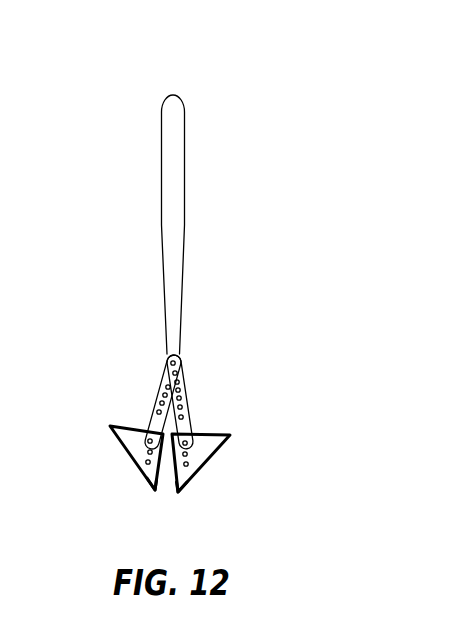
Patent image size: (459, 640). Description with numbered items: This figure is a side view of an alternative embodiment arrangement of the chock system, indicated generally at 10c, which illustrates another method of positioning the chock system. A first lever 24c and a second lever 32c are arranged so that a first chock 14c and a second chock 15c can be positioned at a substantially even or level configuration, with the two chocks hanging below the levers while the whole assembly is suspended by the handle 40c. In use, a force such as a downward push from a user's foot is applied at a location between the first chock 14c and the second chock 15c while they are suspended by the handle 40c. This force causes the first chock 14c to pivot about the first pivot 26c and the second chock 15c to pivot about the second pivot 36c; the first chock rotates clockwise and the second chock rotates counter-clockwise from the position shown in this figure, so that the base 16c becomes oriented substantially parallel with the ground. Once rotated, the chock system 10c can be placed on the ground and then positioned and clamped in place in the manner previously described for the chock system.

The chock system 10c is at (256, 82).
The handle 40c is at (184, 180).
The first lever 24c is at (163, 393).
The second lever 32c is at (188, 383).
The first pivot 26c is at (140, 436).
The second pivot 36c is at (192, 437).
The first chock 14c is at (137, 463).
The second chock 15c is at (222, 446).
The base 16c is at (162, 483).